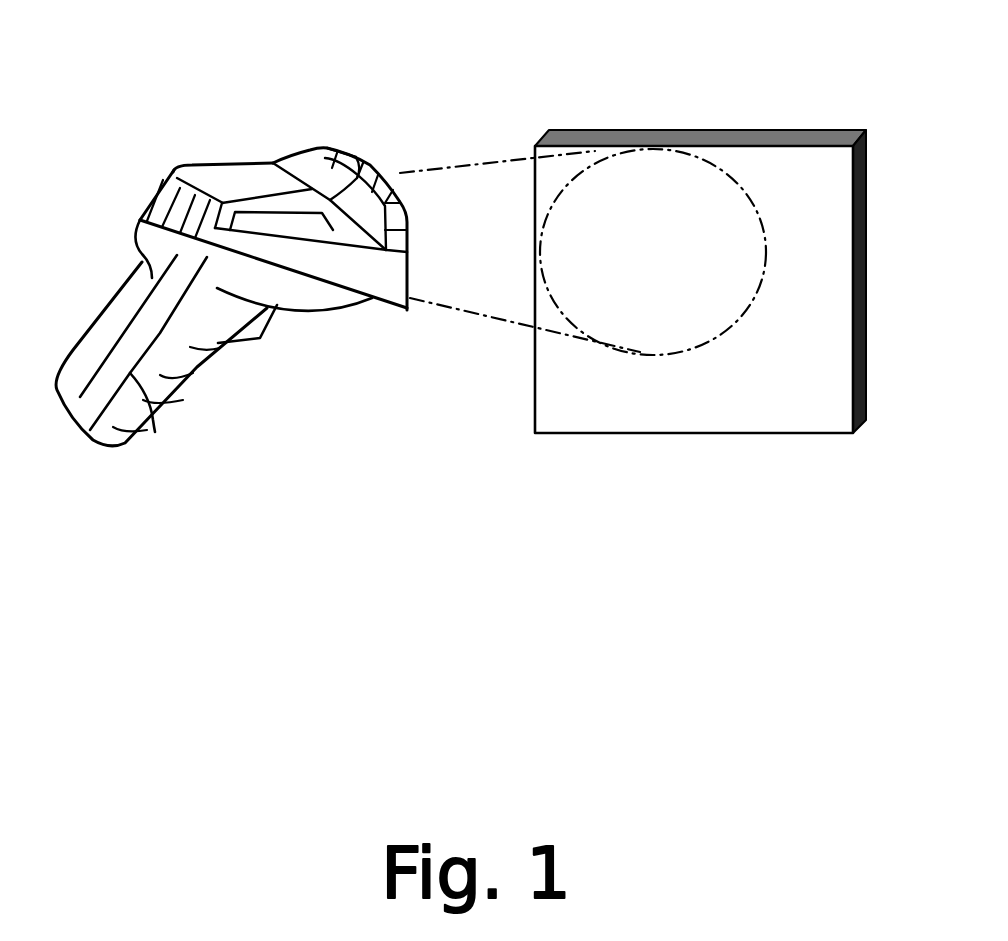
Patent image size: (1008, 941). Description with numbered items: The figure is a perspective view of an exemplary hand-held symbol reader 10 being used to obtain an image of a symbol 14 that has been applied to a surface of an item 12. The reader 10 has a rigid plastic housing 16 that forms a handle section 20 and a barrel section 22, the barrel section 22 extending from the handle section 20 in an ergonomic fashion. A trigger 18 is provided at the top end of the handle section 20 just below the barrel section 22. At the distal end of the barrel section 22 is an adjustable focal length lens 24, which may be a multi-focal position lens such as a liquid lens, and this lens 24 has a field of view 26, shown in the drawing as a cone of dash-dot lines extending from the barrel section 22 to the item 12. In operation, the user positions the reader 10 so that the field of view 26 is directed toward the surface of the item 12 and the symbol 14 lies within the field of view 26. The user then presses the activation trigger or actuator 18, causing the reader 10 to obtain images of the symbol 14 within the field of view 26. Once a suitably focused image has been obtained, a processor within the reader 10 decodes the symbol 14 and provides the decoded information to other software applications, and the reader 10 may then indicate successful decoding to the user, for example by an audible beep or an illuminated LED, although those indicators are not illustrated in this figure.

The hand-held symbol reader 10 is at (264, 68).
The item 12 is at (777, 158).
The symbol 14 is at (628, 187).
The rigid plastic housing 16 is at (140, 260).
The trigger 18 is at (262, 317).
The handle section 20 is at (155, 432).
The barrel section 22 is at (263, 172).
The adjustable focal length lens 24 is at (424, 218).
The field of view 26 is at (577, 173).